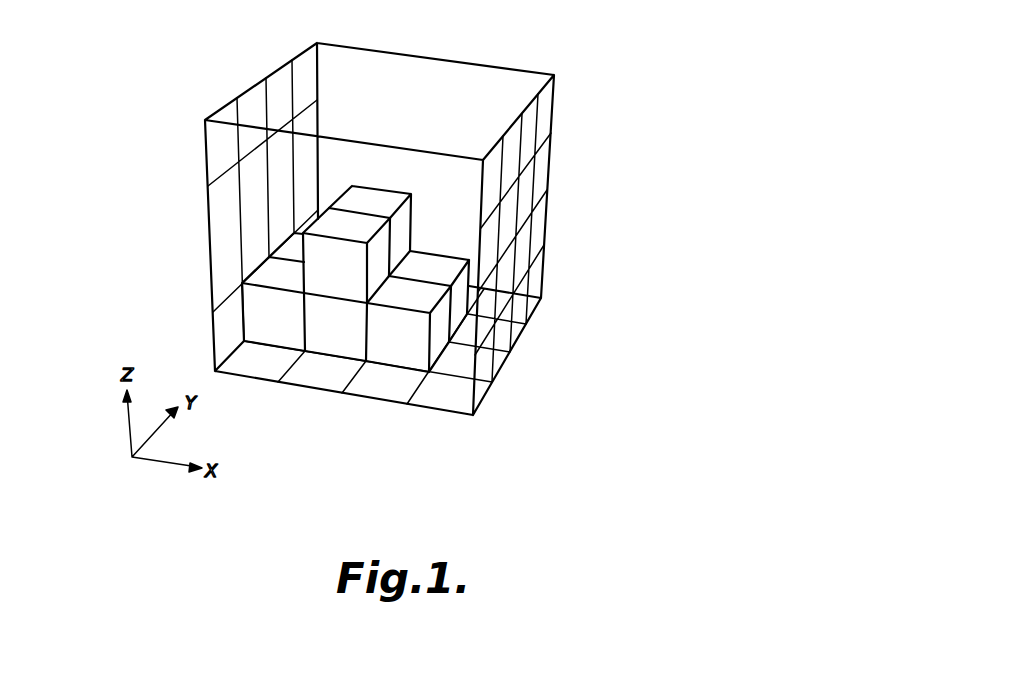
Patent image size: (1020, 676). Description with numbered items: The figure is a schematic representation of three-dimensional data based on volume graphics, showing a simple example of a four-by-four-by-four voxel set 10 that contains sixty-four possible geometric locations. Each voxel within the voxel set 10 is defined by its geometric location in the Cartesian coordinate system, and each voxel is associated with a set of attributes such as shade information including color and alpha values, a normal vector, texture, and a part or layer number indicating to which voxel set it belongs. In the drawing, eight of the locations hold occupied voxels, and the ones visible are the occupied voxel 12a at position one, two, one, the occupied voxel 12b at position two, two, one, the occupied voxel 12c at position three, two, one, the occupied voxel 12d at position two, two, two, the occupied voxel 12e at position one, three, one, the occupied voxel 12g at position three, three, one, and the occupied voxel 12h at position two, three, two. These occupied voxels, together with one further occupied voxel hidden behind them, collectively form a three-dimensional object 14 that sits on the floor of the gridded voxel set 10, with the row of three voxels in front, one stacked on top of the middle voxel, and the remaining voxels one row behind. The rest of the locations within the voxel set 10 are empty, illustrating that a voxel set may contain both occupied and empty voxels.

The voxel set 10 is at (578, 73).
The occupied voxel 12a is at (283, 332).
The occupied voxel 12b is at (348, 331).
The occupied voxel 12c is at (407, 342).
The occupied voxel 12d is at (375, 282).
The occupied voxel 12e is at (289, 248).
The occupied voxel 12g is at (462, 297).
The occupied voxel 12h is at (400, 232).
The 3D object 14 is at (393, 220).